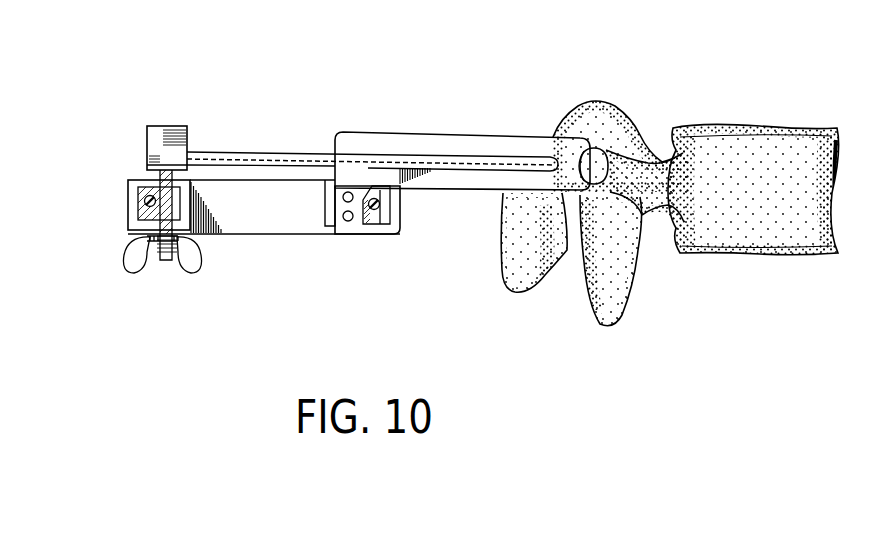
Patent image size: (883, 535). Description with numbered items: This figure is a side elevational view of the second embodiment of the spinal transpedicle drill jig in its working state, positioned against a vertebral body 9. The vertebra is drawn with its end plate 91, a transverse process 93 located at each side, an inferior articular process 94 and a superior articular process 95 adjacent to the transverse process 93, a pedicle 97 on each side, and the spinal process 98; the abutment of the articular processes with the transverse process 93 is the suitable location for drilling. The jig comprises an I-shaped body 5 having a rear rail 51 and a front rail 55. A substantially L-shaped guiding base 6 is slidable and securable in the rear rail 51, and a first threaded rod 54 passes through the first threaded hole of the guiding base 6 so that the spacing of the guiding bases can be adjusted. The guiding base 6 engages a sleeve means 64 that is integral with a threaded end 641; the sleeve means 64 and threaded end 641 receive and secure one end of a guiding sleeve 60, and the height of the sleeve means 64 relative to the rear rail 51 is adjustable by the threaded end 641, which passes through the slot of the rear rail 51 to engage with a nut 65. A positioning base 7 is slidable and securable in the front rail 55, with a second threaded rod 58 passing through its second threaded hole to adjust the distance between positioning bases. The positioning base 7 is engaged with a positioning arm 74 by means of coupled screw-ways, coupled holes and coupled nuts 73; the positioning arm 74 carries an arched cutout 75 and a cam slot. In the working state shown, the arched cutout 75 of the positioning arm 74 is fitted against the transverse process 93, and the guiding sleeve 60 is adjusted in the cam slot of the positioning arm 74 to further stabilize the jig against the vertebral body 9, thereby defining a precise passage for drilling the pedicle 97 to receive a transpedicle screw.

The I-shaped body 5 is at (275, 239).
The guiding base 6 is at (148, 170).
The positioning base 7 is at (368, 228).
The vertebral body 9 is at (657, 227).
The rear rail 51 is at (130, 188).
The first threaded rod 54 is at (141, 195).
The front rail 55 is at (400, 228).
The second threaded rod 58 is at (376, 231).
The guiding sleeve 60 is at (480, 163).
The sleeve means 64 is at (167, 132).
The nut 65 is at (133, 265).
The coupled nut 73 is at (343, 226).
The positioning arm 74 is at (433, 143).
The arched cutout 75 is at (600, 163).
The end plate 91 is at (760, 143).
The transverse process 93 is at (576, 248).
The inferior articular process 94 is at (608, 328).
The superior articular process 95 is at (622, 107).
The pedicle 97 is at (669, 207).
The spinal process 98 is at (507, 263).
The threaded end 641 is at (166, 262).